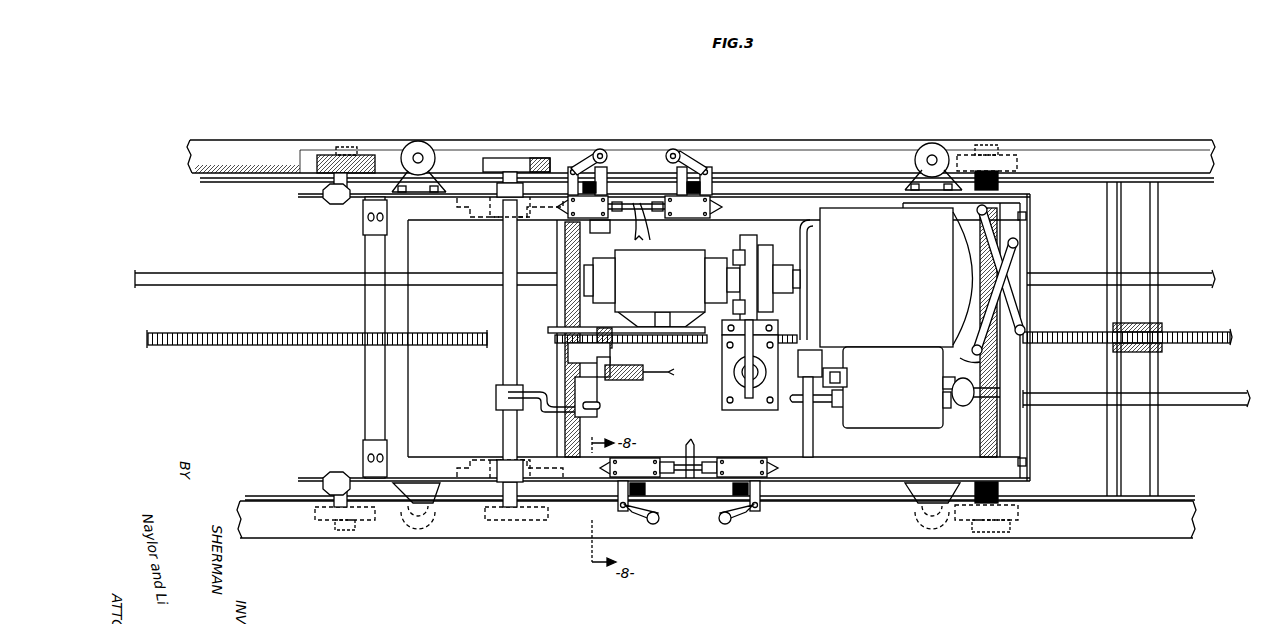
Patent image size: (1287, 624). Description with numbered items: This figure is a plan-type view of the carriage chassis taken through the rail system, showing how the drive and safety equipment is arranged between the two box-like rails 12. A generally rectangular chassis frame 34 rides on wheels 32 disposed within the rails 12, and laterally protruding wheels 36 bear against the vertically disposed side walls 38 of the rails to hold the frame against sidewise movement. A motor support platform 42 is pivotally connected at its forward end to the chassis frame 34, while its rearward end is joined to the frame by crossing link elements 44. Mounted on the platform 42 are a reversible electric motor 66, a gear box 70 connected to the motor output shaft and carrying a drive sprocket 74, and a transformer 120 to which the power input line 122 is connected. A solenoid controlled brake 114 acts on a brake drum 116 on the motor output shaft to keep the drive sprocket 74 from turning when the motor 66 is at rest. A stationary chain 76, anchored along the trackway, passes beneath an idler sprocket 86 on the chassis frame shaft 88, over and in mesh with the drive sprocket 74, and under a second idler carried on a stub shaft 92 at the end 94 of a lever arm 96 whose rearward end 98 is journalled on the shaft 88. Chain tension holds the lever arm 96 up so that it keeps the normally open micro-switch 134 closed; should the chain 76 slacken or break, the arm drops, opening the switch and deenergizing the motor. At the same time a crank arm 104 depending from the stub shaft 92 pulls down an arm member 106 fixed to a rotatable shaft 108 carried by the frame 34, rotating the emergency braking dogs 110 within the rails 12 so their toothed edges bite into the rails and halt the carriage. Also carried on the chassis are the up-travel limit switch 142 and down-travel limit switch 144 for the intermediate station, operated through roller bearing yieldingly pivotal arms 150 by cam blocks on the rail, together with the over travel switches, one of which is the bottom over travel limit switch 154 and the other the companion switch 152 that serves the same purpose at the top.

The box-like rails 12 is at (878, 147).
The wheels 32 is at (356, 160).
The chassis frame 34 is at (872, 493).
The laterally protruding wheels 36 is at (424, 146).
The vertically disposed side walls 38 is at (486, 148).
The motor support platform 42 is at (962, 362).
The crossing link elements 44 is at (1012, 293).
The reversible electric motor 66 is at (870, 253).
The gear box 70 is at (657, 281).
The drive sprocket 74 is at (690, 319).
The stationary chain 76 is at (306, 334).
The idler sprocket 86 is at (826, 336).
The chassis frame shaft 88 is at (804, 428).
The stub shaft 92 is at (597, 415).
The end of lever arm 94 is at (568, 355).
The lever arm 96 is at (690, 380).
The rearward end of lever arm 98 is at (822, 352).
The crank arm 104 is at (606, 406).
The arm member 106 is at (533, 408).
The rotatable shaft 108 is at (497, 375).
The emergency braking dogs 110 is at (520, 160).
The solenoid controlled brake 114 is at (739, 256).
The brake drum 116 is at (766, 262).
The transformer 120 is at (900, 423).
The power input line 122 is at (293, 271).
The micro-switch 134 is at (642, 366).
The up-travel limit switch 142 is at (662, 157).
The down-travel limit switch 144 is at (612, 170).
The roller bearing yieldingly pivotal arms 150 is at (599, 148).
The bracket 152 is at (660, 510).
The bottom over travel limit switch 154 is at (740, 508).